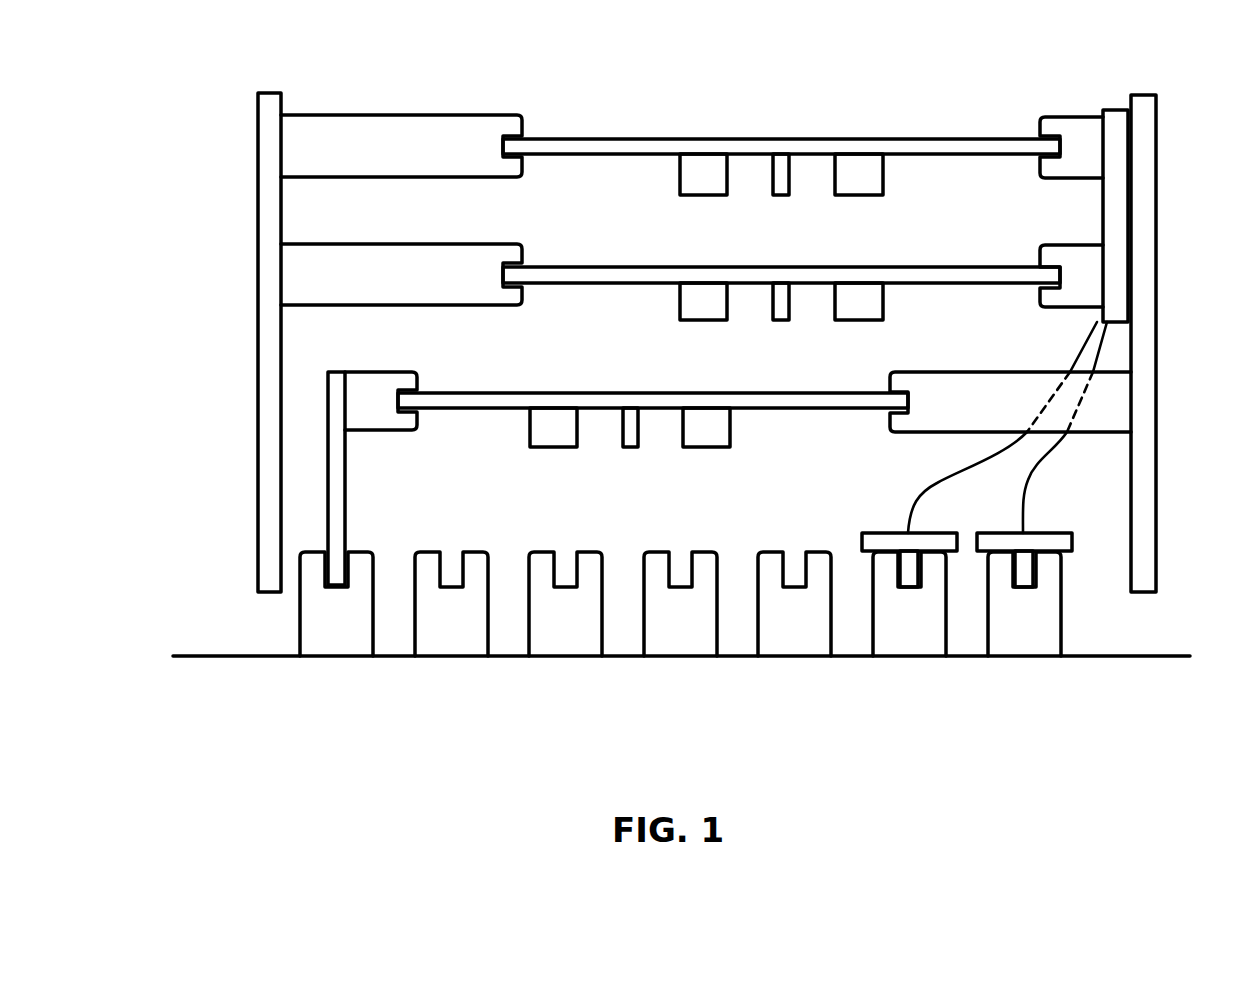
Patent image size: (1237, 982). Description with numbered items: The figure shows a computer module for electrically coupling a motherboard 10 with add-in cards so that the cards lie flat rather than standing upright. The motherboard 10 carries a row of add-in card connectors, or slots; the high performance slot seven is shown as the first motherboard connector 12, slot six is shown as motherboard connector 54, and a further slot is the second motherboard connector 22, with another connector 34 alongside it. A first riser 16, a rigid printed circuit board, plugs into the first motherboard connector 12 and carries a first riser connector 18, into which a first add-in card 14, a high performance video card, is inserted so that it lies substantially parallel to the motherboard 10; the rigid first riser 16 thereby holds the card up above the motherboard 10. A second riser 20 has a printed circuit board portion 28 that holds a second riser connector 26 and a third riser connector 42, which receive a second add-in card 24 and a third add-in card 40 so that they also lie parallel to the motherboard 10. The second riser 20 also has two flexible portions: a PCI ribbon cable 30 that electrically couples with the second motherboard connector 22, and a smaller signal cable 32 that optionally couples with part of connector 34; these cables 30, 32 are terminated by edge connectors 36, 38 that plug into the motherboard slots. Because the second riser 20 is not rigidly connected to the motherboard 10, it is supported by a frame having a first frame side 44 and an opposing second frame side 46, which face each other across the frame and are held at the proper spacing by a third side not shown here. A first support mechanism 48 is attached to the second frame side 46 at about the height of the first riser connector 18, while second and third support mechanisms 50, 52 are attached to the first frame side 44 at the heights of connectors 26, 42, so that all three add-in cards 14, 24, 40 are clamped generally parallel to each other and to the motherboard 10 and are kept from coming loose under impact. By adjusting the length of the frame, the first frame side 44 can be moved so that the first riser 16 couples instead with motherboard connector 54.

The motherboard 10 is at (243, 665).
The first motherboard connector 12 is at (327, 643).
The first add-in card 14 is at (462, 400).
The first riser 16 is at (337, 532).
The first riser connector 18 is at (387, 418).
The second riser 20 is at (1125, 115).
The second motherboard connector 22 is at (1033, 645).
The second add-in card 24 is at (573, 273).
The second riser connector 26 is at (1053, 253).
The printed circuit board portion 28 is at (1127, 307).
The PCI ribbon cable 30 is at (1097, 353).
The signal cable 32 is at (938, 483).
The connector 34 is at (912, 645).
The edge connector 36 is at (1057, 530).
The edge connector 38 is at (868, 532).
The third add-in card 40 is at (887, 143).
The third riser connector 42 is at (1053, 123).
The first frame side 44 is at (267, 142).
The second frame side 46 is at (1148, 152).
The first support mechanism 48 is at (918, 380).
The second support mechanism 50 is at (408, 253).
The third support mechanism 52 is at (385, 123).
The motherboard connector 54 is at (455, 645).